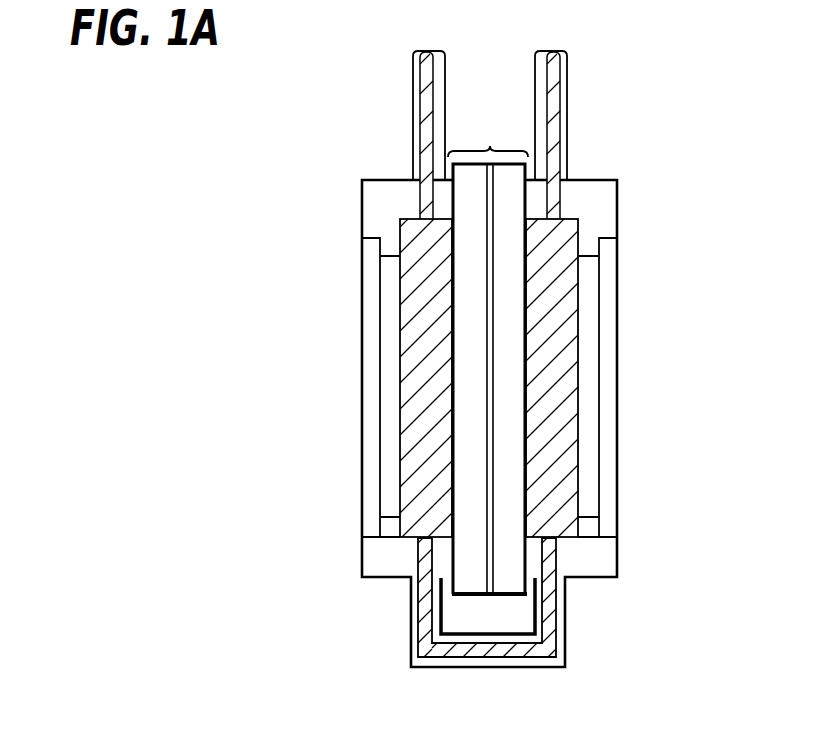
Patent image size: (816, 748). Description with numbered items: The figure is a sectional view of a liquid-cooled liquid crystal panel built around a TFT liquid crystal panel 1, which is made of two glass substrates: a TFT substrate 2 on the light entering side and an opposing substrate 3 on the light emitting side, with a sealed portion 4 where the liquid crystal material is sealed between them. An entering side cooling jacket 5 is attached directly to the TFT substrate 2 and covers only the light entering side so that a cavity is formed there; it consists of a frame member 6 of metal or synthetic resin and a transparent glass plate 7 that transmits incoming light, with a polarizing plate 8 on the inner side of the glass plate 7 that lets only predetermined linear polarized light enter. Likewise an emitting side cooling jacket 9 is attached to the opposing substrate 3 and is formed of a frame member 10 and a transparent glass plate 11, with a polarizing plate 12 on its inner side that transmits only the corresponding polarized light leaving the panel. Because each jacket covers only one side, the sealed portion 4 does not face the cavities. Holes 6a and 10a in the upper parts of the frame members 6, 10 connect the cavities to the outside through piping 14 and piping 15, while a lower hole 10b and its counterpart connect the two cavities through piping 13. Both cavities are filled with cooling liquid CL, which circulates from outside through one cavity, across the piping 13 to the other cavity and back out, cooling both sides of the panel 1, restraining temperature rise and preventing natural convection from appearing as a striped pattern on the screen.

The TFT liquid crystal panel 1 is at (490, 143).
The TFT substrate 2 is at (510, 297).
The opposing substrate 3 is at (470, 297).
The sealed portion 4 is at (488, 596).
The entering side cooling jacket 5 is at (604, 176).
The frame member 6 is at (620, 222).
The hole 6a is at (553, 203).
The transparent glass plate 7 is at (612, 405).
The polarizing plate 8 is at (592, 458).
The emitting side cooling jacket 9 is at (375, 176).
The frame member 10 is at (360, 231).
The hole 10a is at (418, 196).
The hole 10b is at (422, 552).
The transparent glass plate 11 is at (368, 405).
The polarizing plate 12 is at (388, 458).
The piping 13 is at (558, 620).
The piping 14 is at (568, 66).
The piping 15 is at (412, 79).
The cooling liquid CL is at (422, 355).